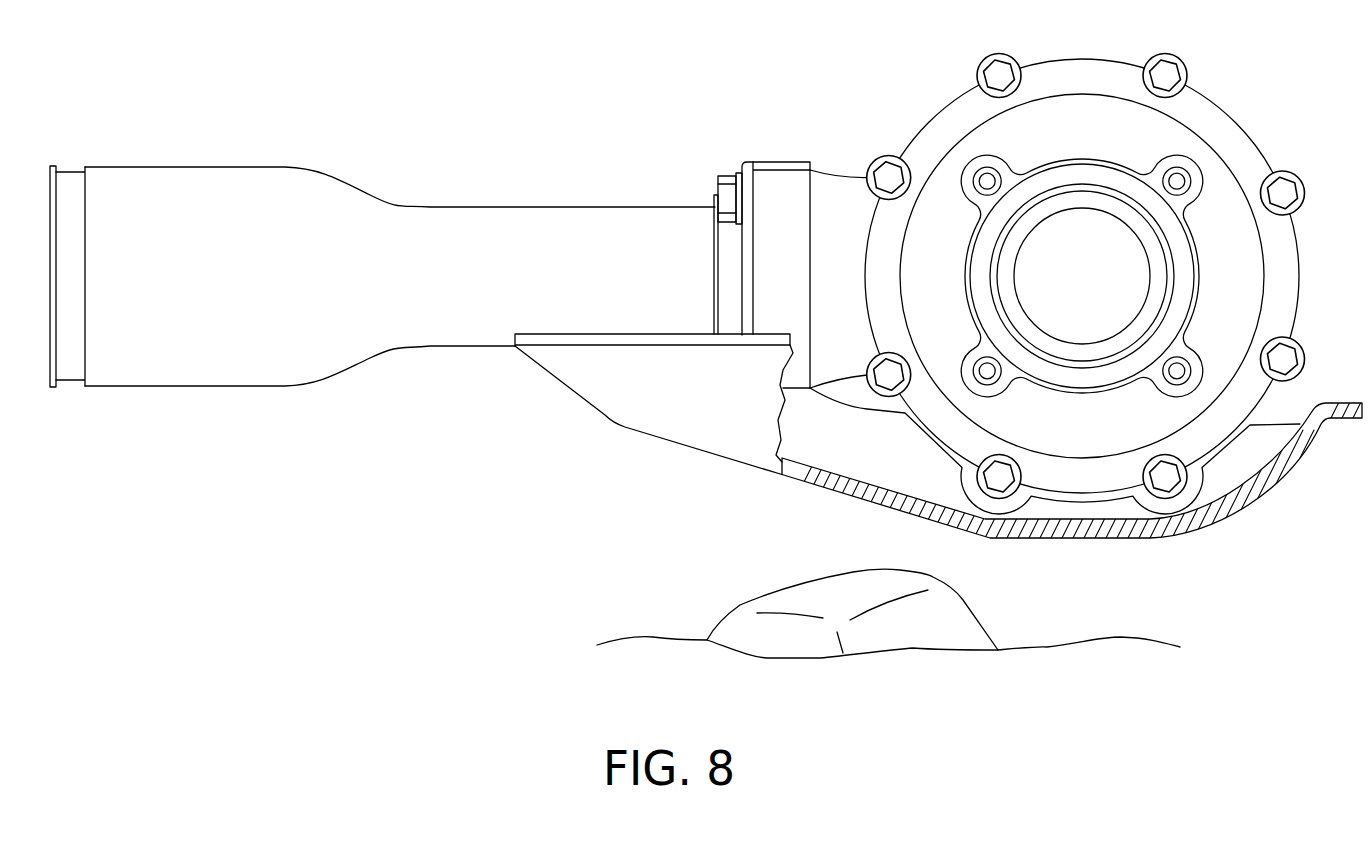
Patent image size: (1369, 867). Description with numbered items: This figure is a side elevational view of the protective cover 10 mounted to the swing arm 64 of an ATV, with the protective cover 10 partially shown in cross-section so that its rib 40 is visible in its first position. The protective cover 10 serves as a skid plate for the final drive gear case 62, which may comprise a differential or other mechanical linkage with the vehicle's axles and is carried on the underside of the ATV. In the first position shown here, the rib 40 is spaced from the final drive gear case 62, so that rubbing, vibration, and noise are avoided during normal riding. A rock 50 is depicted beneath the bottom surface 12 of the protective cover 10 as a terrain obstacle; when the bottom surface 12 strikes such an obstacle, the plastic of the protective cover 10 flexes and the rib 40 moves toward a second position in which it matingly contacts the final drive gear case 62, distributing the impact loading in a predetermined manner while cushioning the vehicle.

The protective cover 10 is at (549, 436).
The bottom surface 12 is at (722, 445).
The rib 40 is at (1120, 512).
The rock 50 is at (910, 630).
The final drive gear case 62 is at (1245, 130).
The swing arm 64 is at (227, 375).